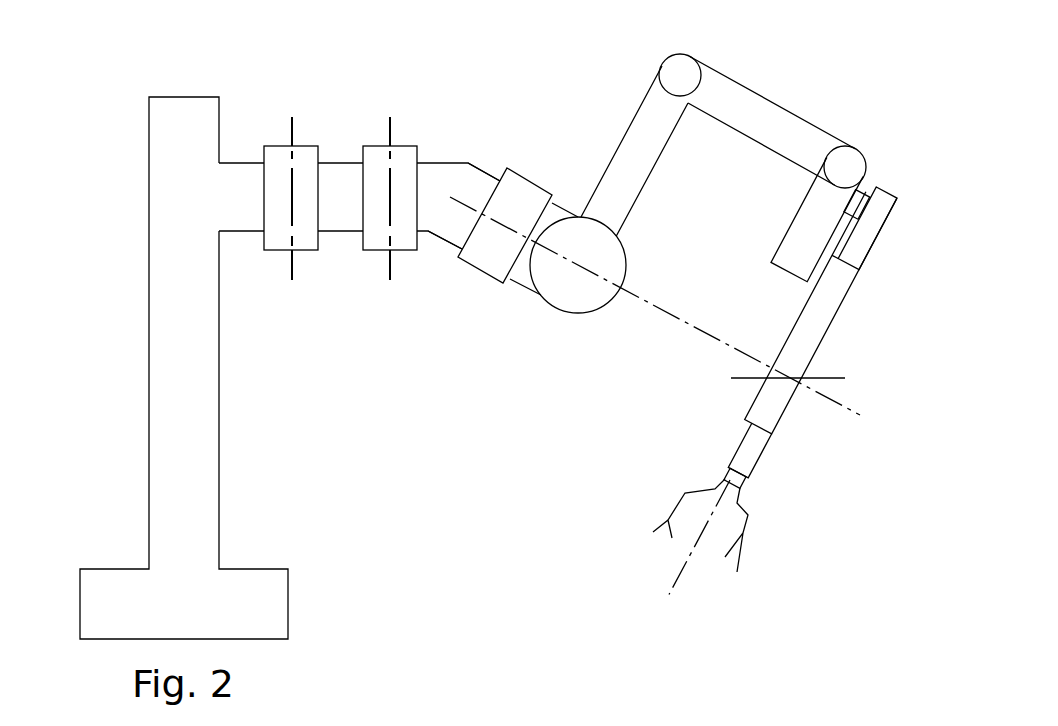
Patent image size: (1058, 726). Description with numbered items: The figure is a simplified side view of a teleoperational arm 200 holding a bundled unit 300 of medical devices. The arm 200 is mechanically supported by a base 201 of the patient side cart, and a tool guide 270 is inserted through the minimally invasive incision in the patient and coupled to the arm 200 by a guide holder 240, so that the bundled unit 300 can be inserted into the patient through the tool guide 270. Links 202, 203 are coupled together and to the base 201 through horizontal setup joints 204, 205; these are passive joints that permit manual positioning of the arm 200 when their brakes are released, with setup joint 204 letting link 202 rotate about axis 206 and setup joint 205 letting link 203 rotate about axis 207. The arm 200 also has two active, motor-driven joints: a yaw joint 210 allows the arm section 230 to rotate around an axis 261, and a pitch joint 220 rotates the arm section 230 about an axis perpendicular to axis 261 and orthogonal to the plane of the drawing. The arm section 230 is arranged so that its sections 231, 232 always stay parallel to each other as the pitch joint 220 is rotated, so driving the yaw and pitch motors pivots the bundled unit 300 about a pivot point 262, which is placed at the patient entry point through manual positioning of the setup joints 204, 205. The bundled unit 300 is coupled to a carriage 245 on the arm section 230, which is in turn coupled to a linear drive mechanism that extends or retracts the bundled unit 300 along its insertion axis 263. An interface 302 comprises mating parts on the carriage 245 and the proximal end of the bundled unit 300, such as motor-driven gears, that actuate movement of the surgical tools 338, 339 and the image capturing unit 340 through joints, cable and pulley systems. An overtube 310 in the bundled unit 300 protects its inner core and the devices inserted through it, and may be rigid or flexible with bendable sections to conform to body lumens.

The arm 200 is at (231, 66).
The base 201 is at (148, 437).
The link 202 is at (340, 234).
The link 203 is at (446, 162).
The setup joint 204 is at (284, 145).
The setup joint 205 is at (382, 145).
The axis 206 is at (294, 270).
The axis 207 is at (393, 270).
The yaw joint 210 is at (530, 172).
The pitch joint 220 is at (592, 310).
The arm section 230 is at (772, 103).
The section 231 is at (628, 122).
The section 232 is at (788, 227).
The guide holder 240 is at (858, 272).
The carriage 245 is at (850, 218).
The axis 261 is at (660, 303).
The pivot point 262 is at (800, 358).
The insertion axis 263 is at (685, 580).
The tool guide 270 is at (796, 324).
The bundled unit 300 is at (772, 452).
The interface 302 is at (862, 188).
The overtube 310 is at (738, 446).
The surgical tool 338 is at (672, 502).
The surgical tool 339 is at (752, 535).
The image capturing unit 340 is at (724, 478).